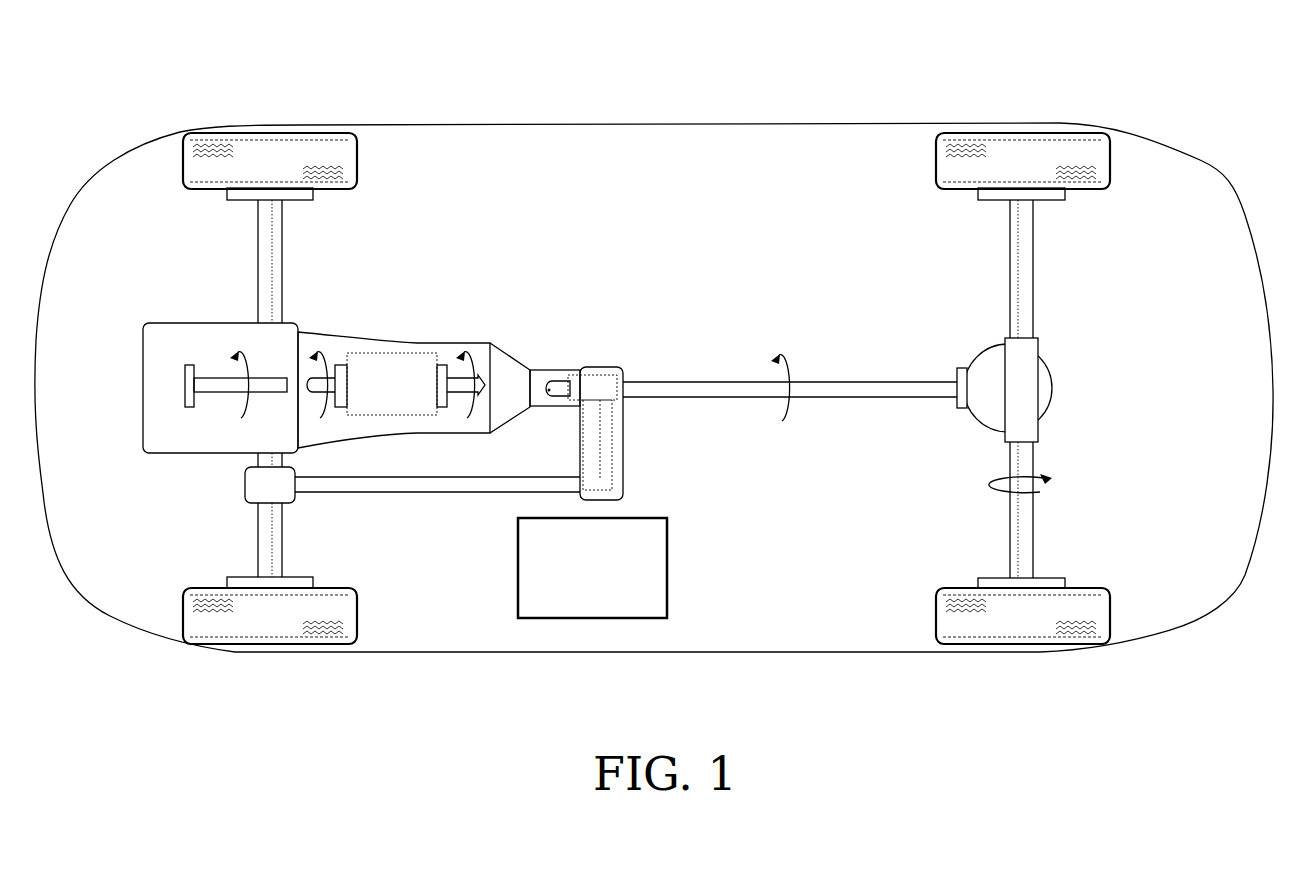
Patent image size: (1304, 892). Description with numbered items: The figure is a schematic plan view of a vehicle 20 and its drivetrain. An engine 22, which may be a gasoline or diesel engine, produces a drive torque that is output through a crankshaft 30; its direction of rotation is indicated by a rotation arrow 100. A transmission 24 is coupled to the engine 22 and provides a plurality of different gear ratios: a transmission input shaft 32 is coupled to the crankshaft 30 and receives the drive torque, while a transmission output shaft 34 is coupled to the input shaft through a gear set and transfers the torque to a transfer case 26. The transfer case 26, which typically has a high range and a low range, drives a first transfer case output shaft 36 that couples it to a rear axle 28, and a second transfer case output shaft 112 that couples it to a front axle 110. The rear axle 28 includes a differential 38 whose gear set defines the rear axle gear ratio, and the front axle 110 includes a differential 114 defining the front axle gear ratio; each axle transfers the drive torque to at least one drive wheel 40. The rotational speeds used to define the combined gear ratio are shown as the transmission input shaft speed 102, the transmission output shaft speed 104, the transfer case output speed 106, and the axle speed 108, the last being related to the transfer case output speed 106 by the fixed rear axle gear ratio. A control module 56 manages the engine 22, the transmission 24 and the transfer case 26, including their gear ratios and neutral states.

The vehicle 20 is at (826, 106).
The engine 22 is at (207, 322).
The transmission 24 is at (423, 342).
The transfer case 26 is at (600, 367).
The rear axle 28 is at (1034, 276).
The crankshaft 30 is at (255, 393).
The transmission input shaft 32 is at (310, 394).
The transmission output shaft 34 is at (560, 380).
The first transfer case output shaft 36 is at (868, 398).
The differential 38 is at (1047, 393).
The drive wheel 40 is at (258, 172).
The control module 56 is at (580, 578).
The crankshaft rotation direction 100 is at (241, 352).
The transmission input shaft speed 102 is at (322, 352).
The transmission output shaft speed 104 is at (468, 354).
The transfer case output speed 106 is at (788, 358).
The axle speed 108 is at (1045, 491).
The front axle 110 is at (271, 245).
The second transfer case output shaft 112 is at (420, 493).
The differential 114 is at (255, 492).